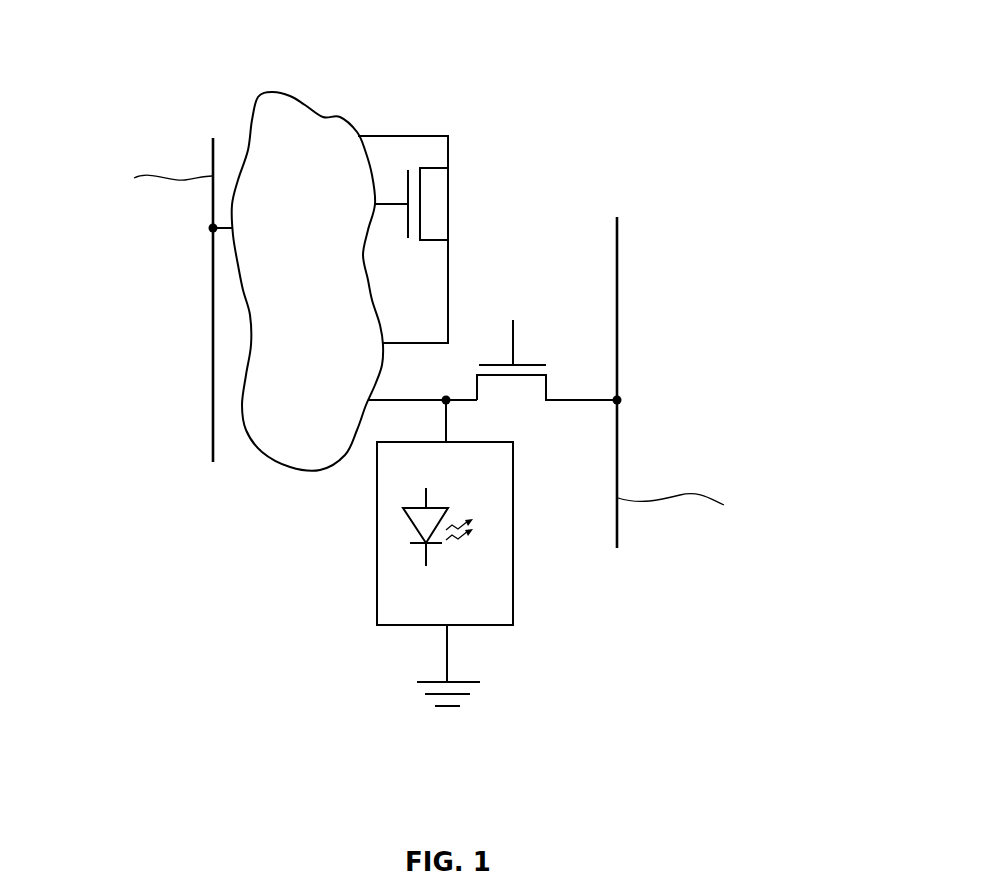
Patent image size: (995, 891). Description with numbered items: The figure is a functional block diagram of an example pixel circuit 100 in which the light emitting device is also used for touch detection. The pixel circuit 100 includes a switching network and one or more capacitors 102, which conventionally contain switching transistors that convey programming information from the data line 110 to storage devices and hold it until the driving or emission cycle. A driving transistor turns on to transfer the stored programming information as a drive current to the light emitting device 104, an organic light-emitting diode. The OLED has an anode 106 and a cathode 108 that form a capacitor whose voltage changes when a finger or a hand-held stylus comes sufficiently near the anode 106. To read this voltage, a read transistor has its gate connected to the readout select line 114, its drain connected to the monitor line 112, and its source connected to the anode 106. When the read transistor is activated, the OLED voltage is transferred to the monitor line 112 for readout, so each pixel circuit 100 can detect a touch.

The pixel circuit 100 is at (588, 50).
The switching network and capacitors 102 is at (293, 98).
The light emitting device 104 is at (375, 597).
The anode 106 is at (422, 492).
The cathode 108 is at (424, 561).
The VDATA line 110 is at (212, 435).
The monitor line 112 is at (618, 275).
The readout select line 114 is at (514, 342).